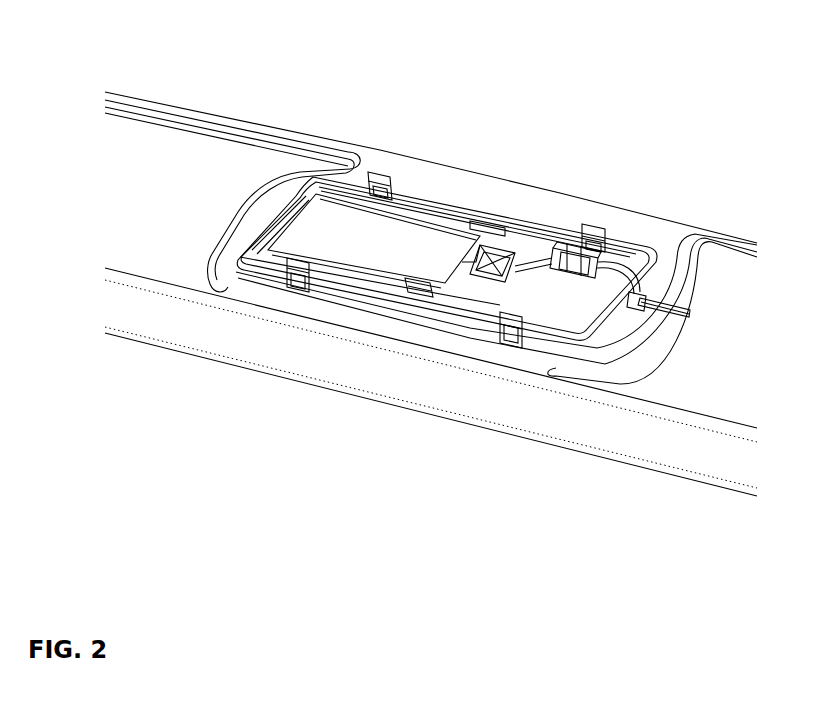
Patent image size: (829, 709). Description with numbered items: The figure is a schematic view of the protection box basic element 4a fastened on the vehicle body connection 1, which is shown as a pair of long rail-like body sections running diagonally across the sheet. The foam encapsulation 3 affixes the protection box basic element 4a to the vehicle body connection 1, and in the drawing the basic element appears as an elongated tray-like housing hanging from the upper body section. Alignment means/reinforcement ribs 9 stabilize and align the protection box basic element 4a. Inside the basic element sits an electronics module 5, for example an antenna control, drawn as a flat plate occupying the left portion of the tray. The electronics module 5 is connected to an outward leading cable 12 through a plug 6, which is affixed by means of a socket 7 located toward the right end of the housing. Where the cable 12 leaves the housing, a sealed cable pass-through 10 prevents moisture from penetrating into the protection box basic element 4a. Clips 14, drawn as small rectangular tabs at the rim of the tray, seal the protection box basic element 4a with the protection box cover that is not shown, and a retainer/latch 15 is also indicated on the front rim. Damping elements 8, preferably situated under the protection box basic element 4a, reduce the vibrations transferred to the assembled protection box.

The vehicle body connection 1 is at (178, 196).
The foam encapsulation 3 is at (538, 200).
The protection box basic element 4a is at (450, 317).
The electronics module 5 is at (388, 237).
The plug 6 is at (578, 249).
The socket 7 is at (561, 285).
The damping element 8 is at (492, 232).
The alignment means/reinforcement ribs 9 is at (491, 263).
The cable pass-through 10 is at (636, 310).
The cable 12 is at (680, 299).
The clips/threaded cap 14 is at (376, 183).
The retainer/latch 15 is at (413, 297).